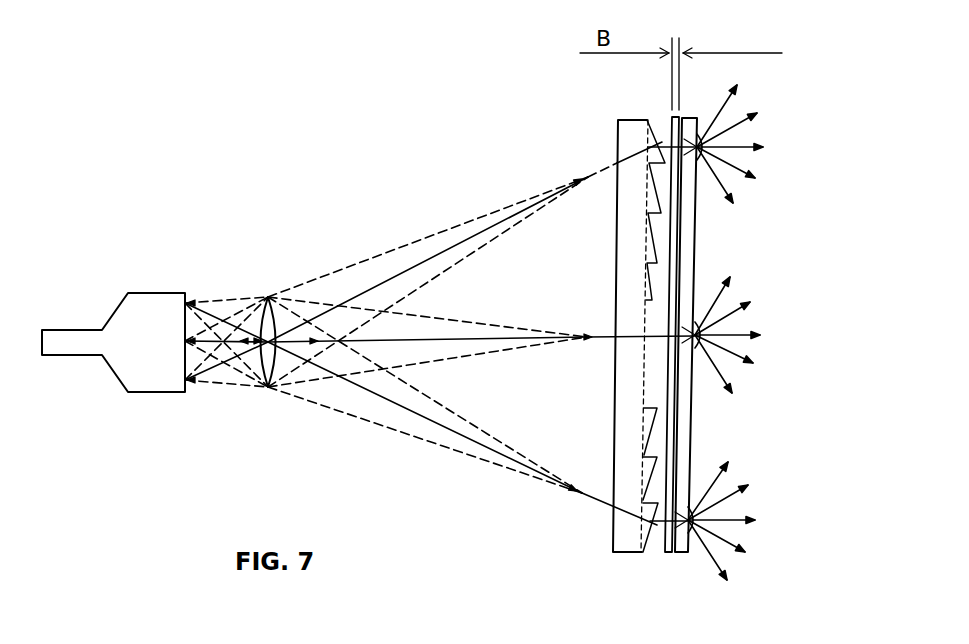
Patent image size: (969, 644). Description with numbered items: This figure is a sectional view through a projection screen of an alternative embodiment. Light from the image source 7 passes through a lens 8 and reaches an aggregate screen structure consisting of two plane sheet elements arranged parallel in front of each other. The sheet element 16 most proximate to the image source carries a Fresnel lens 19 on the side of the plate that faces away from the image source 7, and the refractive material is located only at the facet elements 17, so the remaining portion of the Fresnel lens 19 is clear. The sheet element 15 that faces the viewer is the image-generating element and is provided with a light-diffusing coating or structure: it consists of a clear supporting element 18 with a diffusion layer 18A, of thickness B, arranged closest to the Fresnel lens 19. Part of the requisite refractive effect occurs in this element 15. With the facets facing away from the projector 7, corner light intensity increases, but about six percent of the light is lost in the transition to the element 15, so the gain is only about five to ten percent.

The image source 7 is at (129, 368).
The condenser lens 8 is at (263, 388).
The sheet element 15 is at (677, 560).
The sheet element 16 is at (628, 540).
The facet elements 17 is at (640, 472).
The clear supporting element 18 is at (683, 430).
The diffusion layer 18A is at (694, 388).
The Fresnel lens 19 is at (650, 243).